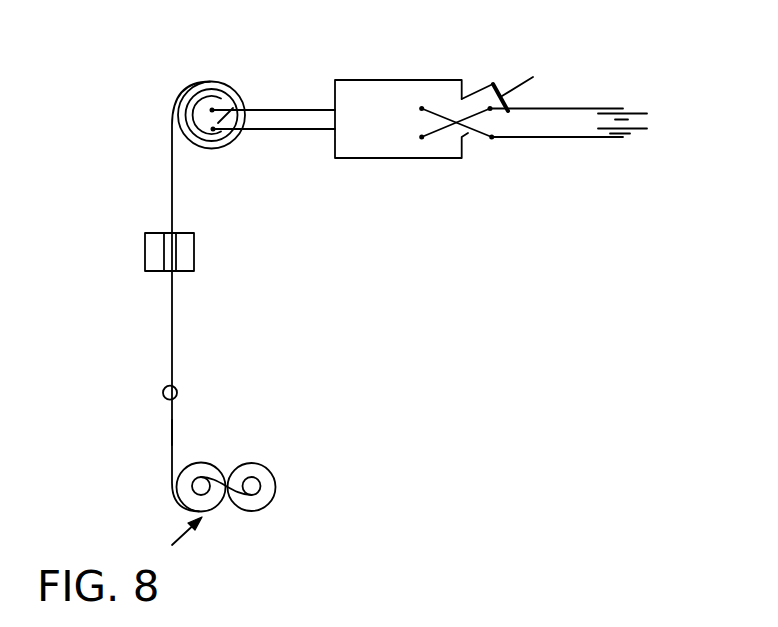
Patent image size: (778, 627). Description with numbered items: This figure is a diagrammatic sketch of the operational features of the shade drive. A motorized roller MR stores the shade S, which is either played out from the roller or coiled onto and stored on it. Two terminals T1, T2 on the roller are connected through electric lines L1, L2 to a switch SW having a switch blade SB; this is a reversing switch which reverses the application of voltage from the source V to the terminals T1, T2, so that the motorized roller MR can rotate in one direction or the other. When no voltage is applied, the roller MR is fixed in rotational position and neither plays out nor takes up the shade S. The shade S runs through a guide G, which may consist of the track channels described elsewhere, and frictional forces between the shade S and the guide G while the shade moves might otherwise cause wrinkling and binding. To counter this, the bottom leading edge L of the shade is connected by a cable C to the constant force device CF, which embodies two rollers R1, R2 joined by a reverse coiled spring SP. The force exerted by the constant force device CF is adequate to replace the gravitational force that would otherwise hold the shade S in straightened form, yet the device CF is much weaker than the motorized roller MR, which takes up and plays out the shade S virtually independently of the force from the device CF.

The shade S is at (170, 167).
The terminal T1 is at (212, 108).
The terminal T2 is at (213, 131).
The motorized roller MR is at (231, 109).
The electric line L1 is at (290, 102).
The electric line L2 is at (287, 130).
The switch SW is at (472, 142).
The switch blade SB is at (498, 86).
The source V is at (642, 122).
The guide G is at (187, 252).
The bottom leading edge L is at (177, 392).
The cable C is at (168, 431).
The roller R1 is at (204, 464).
The roller R2 is at (256, 464).
The reverse coiled spring SP is at (225, 495).
The constant force device CF is at (171, 539).